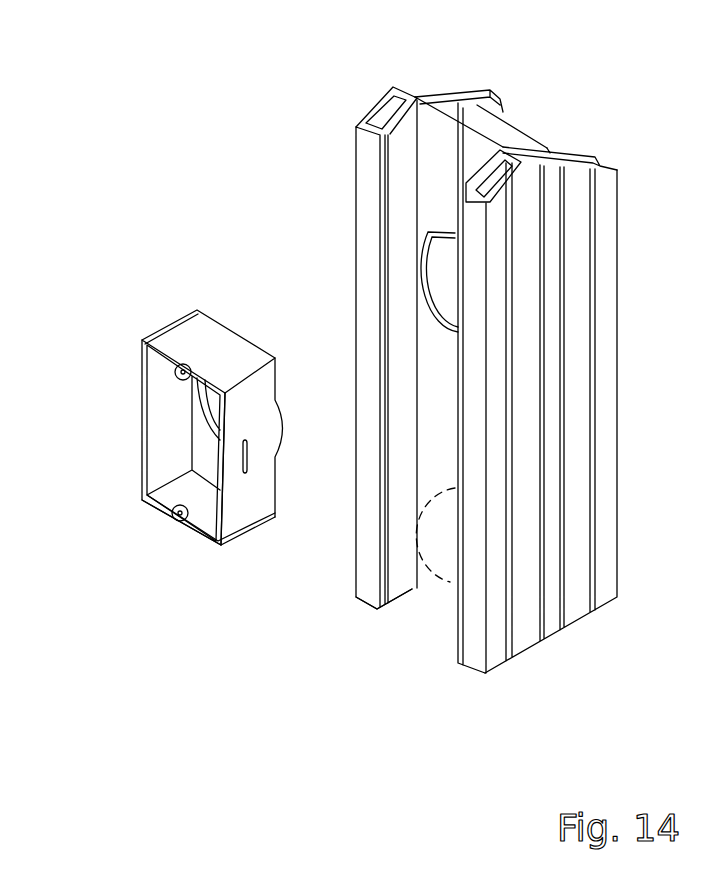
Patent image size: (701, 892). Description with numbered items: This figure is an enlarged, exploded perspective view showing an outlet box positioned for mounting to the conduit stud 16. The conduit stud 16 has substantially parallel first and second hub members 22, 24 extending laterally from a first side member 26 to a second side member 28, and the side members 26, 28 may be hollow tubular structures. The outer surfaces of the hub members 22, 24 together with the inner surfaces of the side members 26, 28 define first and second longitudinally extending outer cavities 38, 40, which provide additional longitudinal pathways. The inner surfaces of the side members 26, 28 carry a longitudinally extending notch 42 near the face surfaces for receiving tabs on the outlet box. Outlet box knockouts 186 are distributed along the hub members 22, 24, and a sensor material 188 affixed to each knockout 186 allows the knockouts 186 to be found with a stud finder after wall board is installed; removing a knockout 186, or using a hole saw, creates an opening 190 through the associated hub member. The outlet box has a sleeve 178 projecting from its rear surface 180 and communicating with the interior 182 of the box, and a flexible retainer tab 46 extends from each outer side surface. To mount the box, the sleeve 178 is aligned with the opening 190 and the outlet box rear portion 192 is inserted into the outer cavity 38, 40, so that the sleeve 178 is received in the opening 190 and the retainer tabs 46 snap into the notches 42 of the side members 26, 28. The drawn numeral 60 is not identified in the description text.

The conduit stud 16 is at (358, 154).
The first hub member 22 is at (437, 130).
The second hub member 24 is at (517, 130).
The first side member 26 is at (602, 287).
The second side member 28 is at (363, 127).
The first outer cavity 38 is at (403, 190).
The second outer cavity 40 is at (567, 145).
The notch 42 is at (383, 610).
The retainer tab 46 is at (243, 473).
The bottom rim 60 is at (220, 548).
The sleeve 178 is at (283, 430).
The rear surface 180 is at (243, 333).
The interior 182 is at (153, 433).
The outlet box knockout 186 is at (442, 557).
The sensor material 188 is at (455, 535).
The opening 190 is at (437, 263).
The outlet box rear portion 192 is at (182, 315).